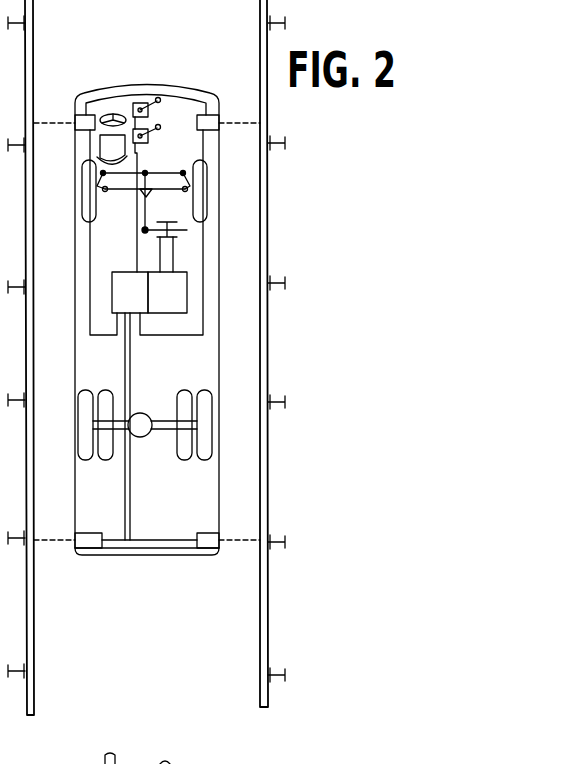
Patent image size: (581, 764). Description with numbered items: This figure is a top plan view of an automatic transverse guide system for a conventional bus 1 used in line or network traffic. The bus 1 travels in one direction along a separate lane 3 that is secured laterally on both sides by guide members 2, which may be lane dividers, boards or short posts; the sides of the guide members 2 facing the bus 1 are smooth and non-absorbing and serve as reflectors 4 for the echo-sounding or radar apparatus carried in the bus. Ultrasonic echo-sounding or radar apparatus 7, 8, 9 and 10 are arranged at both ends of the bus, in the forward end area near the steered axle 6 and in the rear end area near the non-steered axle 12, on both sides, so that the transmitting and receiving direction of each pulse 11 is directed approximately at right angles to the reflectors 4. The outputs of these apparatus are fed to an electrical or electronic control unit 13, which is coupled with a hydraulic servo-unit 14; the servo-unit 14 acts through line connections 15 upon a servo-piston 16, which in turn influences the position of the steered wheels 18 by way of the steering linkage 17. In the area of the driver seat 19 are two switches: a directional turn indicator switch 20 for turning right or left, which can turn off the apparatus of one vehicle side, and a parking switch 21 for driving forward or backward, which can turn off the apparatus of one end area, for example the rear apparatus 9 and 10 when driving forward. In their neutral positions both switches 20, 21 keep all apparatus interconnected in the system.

The bus 1 is at (219, 298).
The guide members 2 is at (262, 237).
The lane 3 is at (89, 19).
The reflectors 4 is at (36, 364).
The steered axle 6 is at (146, 335).
The echo-sounding or radar apparatus 7 is at (203, 115).
The echo-sounding or radar apparatus 8 is at (83, 116).
The echo-sounding or radar apparatus 9 is at (207, 545).
The echo-sounding or radar apparatus 10 is at (90, 545).
The pulse 11 is at (236, 122).
The non-steered axle 12 is at (150, 433).
The control unit 13 is at (137, 301).
The hydraulic servo-unit 14 is at (173, 301).
The line connections 15 is at (165, 259).
The servo-piston 16 is at (183, 241).
The steering linkage 17 is at (164, 182).
The steered wheels 18 is at (210, 204).
The driver seat 19 is at (112, 145).
The directional turn indicator switch 20 is at (141, 103).
The parking switch 21 is at (147, 143).